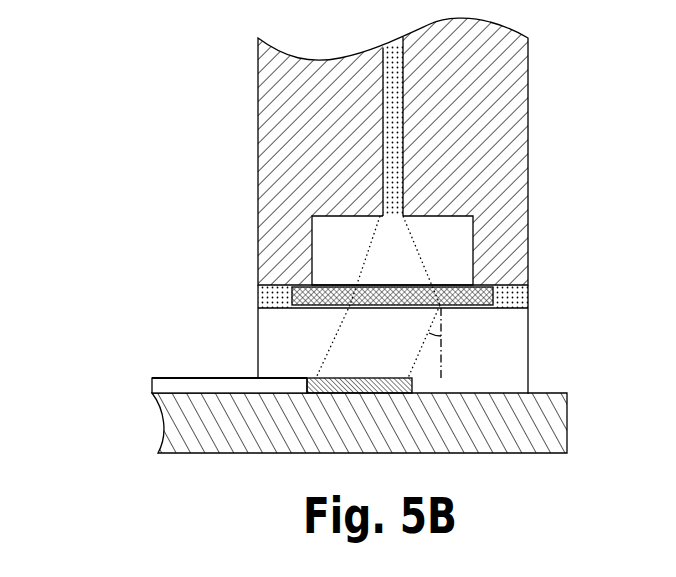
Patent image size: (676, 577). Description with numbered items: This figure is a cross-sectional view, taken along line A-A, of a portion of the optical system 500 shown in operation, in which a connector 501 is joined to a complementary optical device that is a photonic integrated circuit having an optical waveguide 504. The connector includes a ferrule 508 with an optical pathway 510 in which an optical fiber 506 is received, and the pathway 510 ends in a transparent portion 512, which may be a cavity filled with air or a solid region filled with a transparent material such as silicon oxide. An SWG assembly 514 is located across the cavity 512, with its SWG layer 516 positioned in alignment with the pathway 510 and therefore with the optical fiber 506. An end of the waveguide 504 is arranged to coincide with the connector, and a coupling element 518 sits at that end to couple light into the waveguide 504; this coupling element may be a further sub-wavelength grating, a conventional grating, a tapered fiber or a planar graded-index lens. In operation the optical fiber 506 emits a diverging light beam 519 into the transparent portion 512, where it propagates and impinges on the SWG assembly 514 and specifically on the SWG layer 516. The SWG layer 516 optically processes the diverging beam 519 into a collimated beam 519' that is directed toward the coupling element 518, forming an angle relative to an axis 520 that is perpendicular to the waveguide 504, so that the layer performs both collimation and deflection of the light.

The optical system 500 is at (91, 163).
The connector 501 is at (254, 101).
The optical waveguide 504 is at (162, 378).
The optical fiber 506 is at (393, 55).
The ferrule 508 is at (268, 161).
The optical pathway 510 is at (382, 80).
The transparent portion 512 is at (356, 242).
The SWG assembly 514 is at (256, 292).
The SWG layer 516 is at (487, 295).
The coupling element 518 is at (389, 379).
The light beam 519 is at (406, 260).
The collimated beam 519' is at (351, 341).
The axis 520 is at (442, 320).